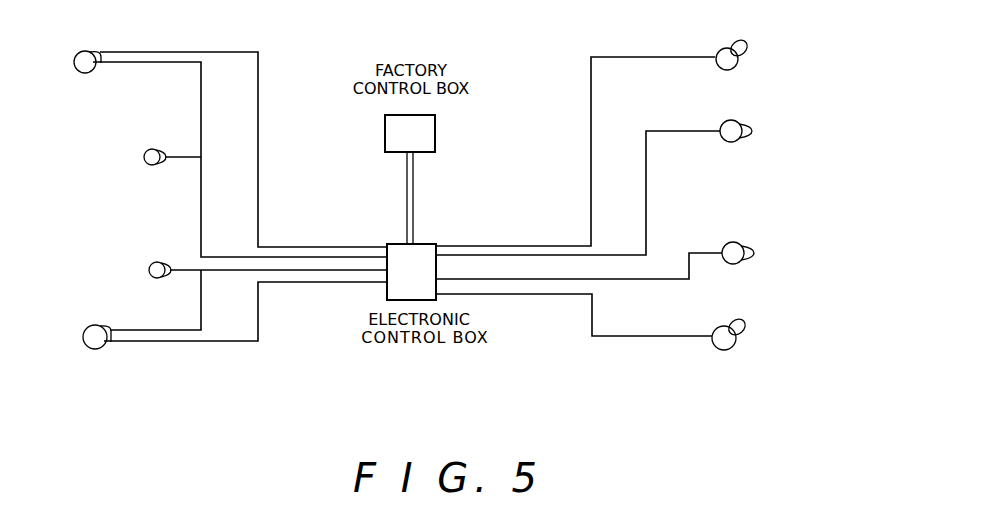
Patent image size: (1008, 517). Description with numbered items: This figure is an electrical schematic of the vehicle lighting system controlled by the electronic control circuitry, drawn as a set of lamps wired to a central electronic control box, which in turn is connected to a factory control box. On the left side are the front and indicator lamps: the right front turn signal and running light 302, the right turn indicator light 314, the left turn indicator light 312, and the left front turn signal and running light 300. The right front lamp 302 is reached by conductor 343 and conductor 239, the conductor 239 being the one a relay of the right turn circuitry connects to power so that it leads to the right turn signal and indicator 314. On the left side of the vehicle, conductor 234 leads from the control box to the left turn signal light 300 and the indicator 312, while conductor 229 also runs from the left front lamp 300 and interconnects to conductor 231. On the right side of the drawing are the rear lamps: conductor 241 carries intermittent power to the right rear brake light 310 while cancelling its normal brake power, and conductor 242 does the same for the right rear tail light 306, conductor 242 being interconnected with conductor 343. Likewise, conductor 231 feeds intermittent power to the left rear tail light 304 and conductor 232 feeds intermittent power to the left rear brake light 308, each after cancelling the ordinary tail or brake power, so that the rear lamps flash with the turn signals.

The right front turn signal and running light 302 is at (78, 42).
The conductor 343 is at (189, 37).
The conductor 239 is at (140, 68).
The right turn indicator light 314 is at (144, 162).
The left turn indicator light 312 is at (148, 263).
The conductor 234 is at (164, 328).
The left front turn signal and running light 300 is at (88, 348).
The conductor 229 is at (165, 345).
The conductor 241 is at (663, 55).
The right rear brake light 310 is at (745, 58).
The conductor 242 is at (685, 130).
The right rear tail light 306 is at (756, 133).
The conductor 231 is at (652, 282).
The left rear tail light 304 is at (762, 252).
The conductor 232 is at (650, 339).
The left rear brake light 308 is at (746, 325).